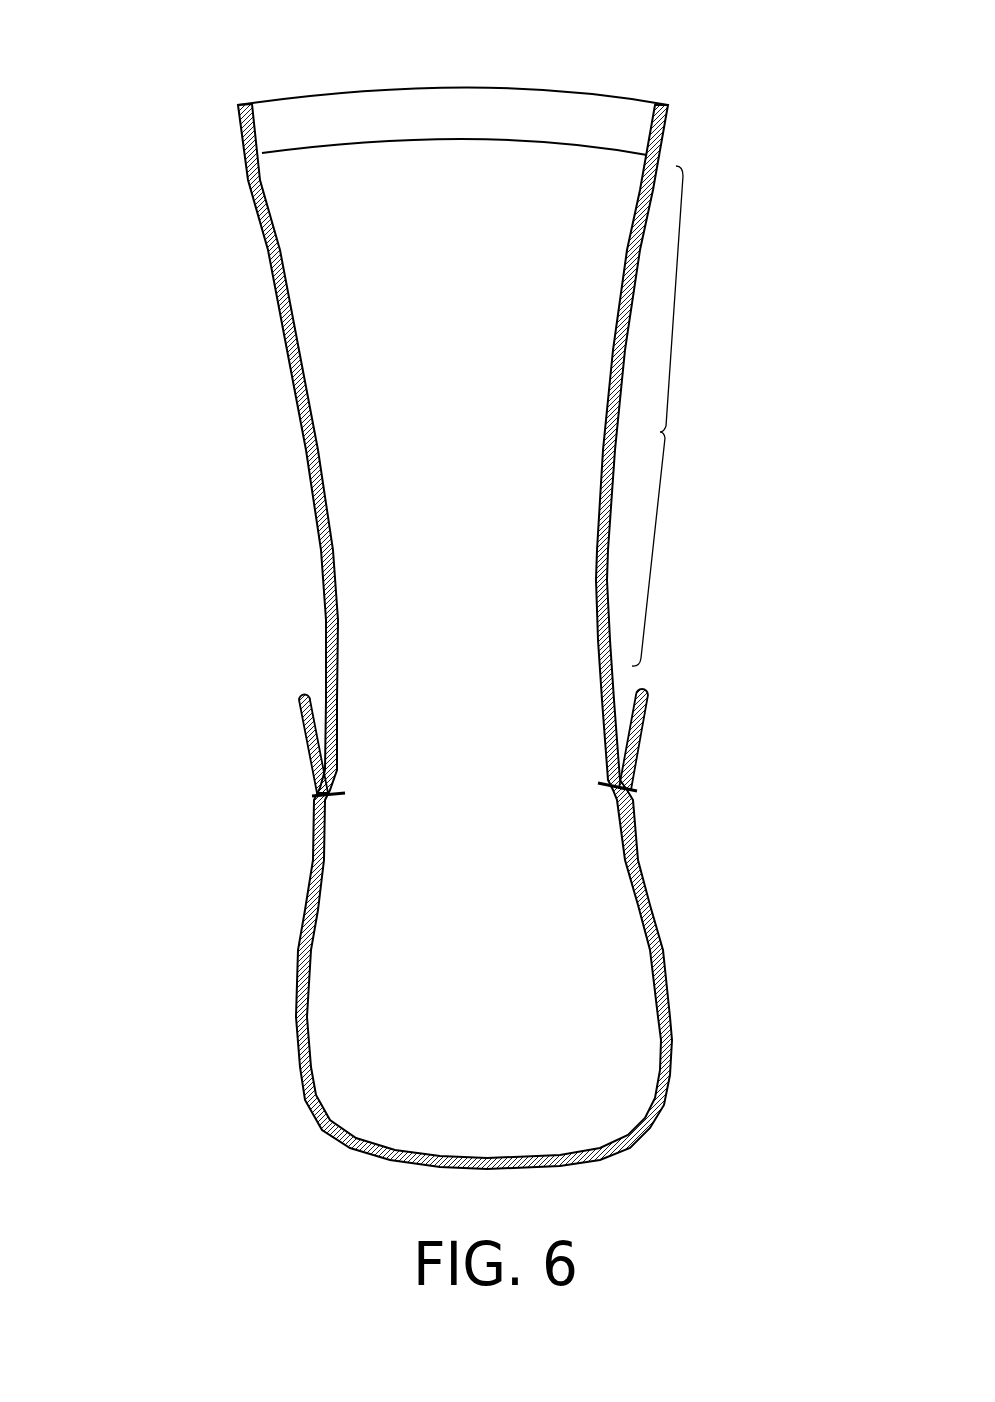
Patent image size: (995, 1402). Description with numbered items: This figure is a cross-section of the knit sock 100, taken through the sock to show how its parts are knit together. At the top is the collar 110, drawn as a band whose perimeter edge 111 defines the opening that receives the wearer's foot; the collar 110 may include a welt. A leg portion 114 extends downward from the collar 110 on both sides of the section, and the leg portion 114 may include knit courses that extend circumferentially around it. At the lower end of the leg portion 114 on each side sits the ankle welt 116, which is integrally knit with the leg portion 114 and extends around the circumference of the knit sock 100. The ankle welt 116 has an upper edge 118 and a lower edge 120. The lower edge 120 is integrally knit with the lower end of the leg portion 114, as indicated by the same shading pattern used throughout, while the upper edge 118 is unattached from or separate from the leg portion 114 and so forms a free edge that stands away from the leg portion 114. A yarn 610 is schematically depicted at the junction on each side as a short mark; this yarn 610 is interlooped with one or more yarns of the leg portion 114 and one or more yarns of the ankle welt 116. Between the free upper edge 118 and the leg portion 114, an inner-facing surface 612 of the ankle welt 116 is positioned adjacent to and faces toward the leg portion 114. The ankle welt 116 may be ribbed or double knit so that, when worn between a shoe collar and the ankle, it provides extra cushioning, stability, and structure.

The knit sock 100 is at (137, 257).
The collar 110 is at (630, 122).
The perimeter edge 111 is at (513, 87).
The leg portion 114 is at (674, 416).
The ankle welt 116 is at (265, 745).
The upper edge 118 is at (300, 695).
The lower edge 120 is at (313, 797).
The yarn 610 is at (345, 797).
The inner-facing surface 612 is at (313, 714).